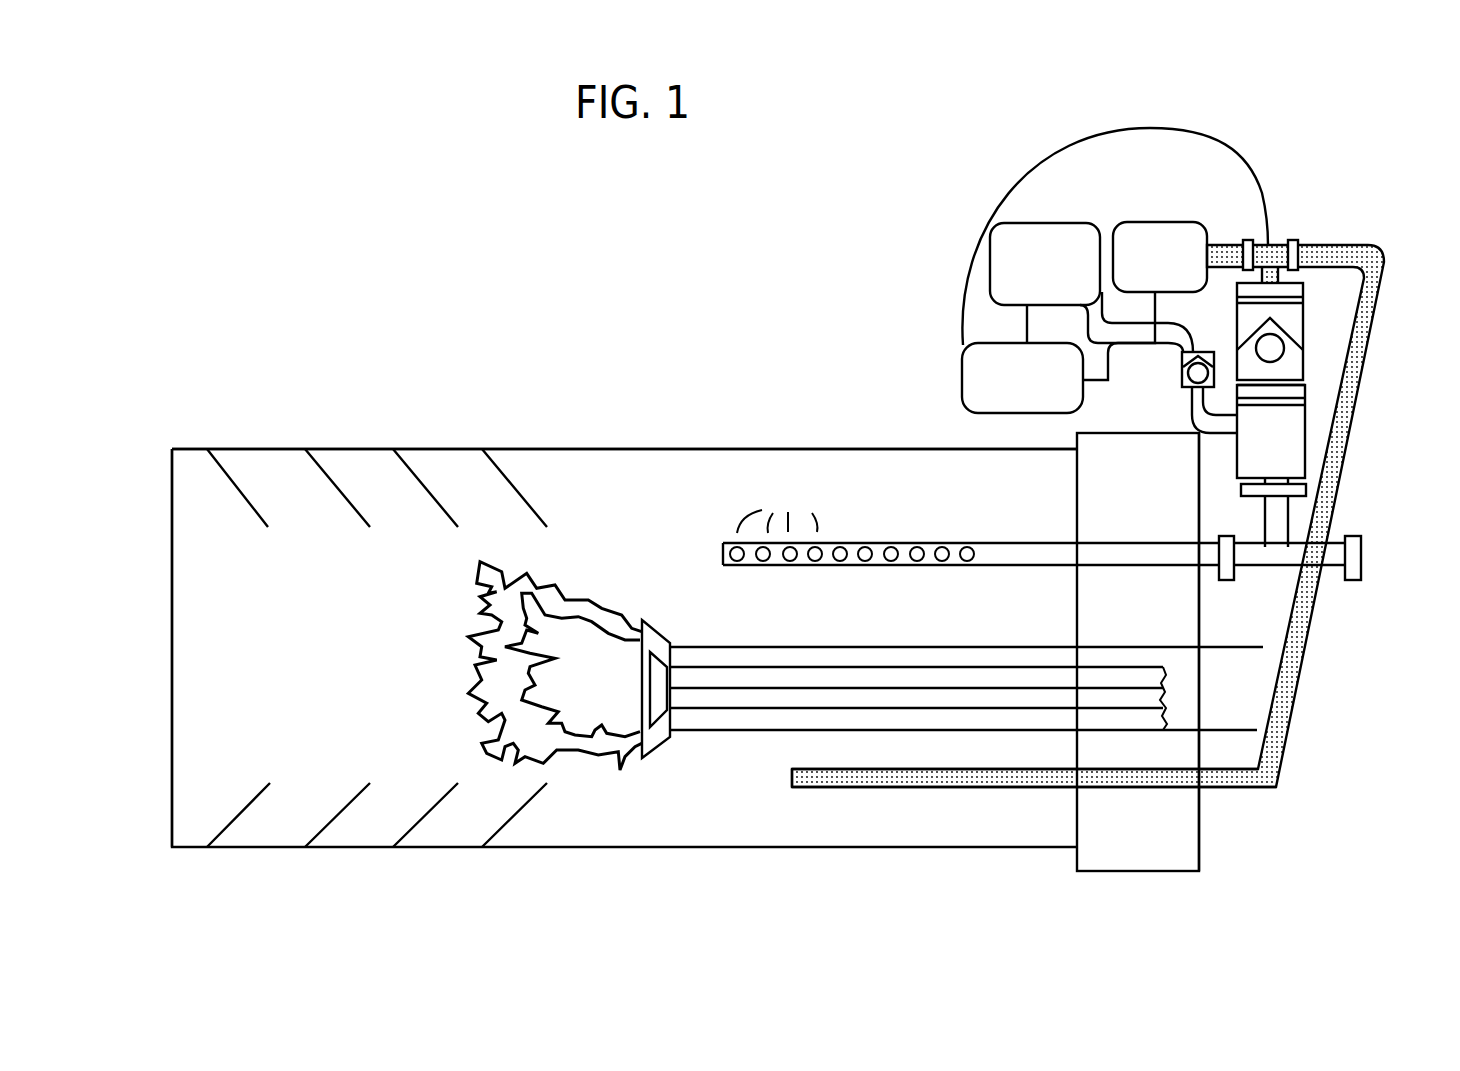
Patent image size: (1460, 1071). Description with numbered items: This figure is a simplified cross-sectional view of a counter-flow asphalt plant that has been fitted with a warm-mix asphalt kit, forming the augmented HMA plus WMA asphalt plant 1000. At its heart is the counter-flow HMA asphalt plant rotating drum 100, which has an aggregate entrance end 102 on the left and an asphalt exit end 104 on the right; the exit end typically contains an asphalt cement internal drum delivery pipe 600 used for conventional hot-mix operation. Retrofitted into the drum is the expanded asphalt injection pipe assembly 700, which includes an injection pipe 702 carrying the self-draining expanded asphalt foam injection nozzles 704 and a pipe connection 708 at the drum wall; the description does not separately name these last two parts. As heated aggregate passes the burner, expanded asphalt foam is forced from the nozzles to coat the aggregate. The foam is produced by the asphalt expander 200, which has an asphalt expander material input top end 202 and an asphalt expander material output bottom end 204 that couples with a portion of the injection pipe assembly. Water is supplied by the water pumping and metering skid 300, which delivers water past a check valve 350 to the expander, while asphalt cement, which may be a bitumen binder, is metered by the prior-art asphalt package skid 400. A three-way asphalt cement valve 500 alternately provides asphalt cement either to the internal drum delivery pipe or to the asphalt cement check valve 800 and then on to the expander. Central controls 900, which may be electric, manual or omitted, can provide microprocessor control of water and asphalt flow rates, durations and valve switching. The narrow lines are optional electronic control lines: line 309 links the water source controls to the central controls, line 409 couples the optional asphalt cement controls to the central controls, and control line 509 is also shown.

The counter-flow HMA asphalt plant rotating drum 100 is at (290, 415).
The aggregate entrance end 102 is at (148, 636).
The asphalt exit end 104 is at (1360, 660).
The augmented HMA plus WMA asphalt plant 1000 is at (498, 393).
The asphalt expander 200 is at (1271, 431).
The asphalt expander material input top end 202 is at (1305, 390).
The asphalt expander material output bottom end 204 is at (1307, 478).
The water pumping and metering skid 300 is at (1027, 223).
The control line 309 is at (1027, 328).
The check valve 350 is at (1205, 352).
The asphalt package skid 400 is at (1155, 222).
The control line 409 is at (1108, 365).
The 3-way asphalt cement valve 500 is at (1285, 220).
The control line 509 is at (1227, 138).
The asphalt cement internal drum delivery pipe 600 is at (1286, 737).
The expanded asphalt injection pipe assembly 700 is at (1400, 532).
The perforated injector pipe 702 is at (705, 557).
The self-draining expanded asphalt foam injection nozzles 704 is at (846, 522).
The pipe connection 708 is at (1269, 532).
The asphalt cement check valve 800 is at (1340, 303).
The central controls 900 is at (962, 381).